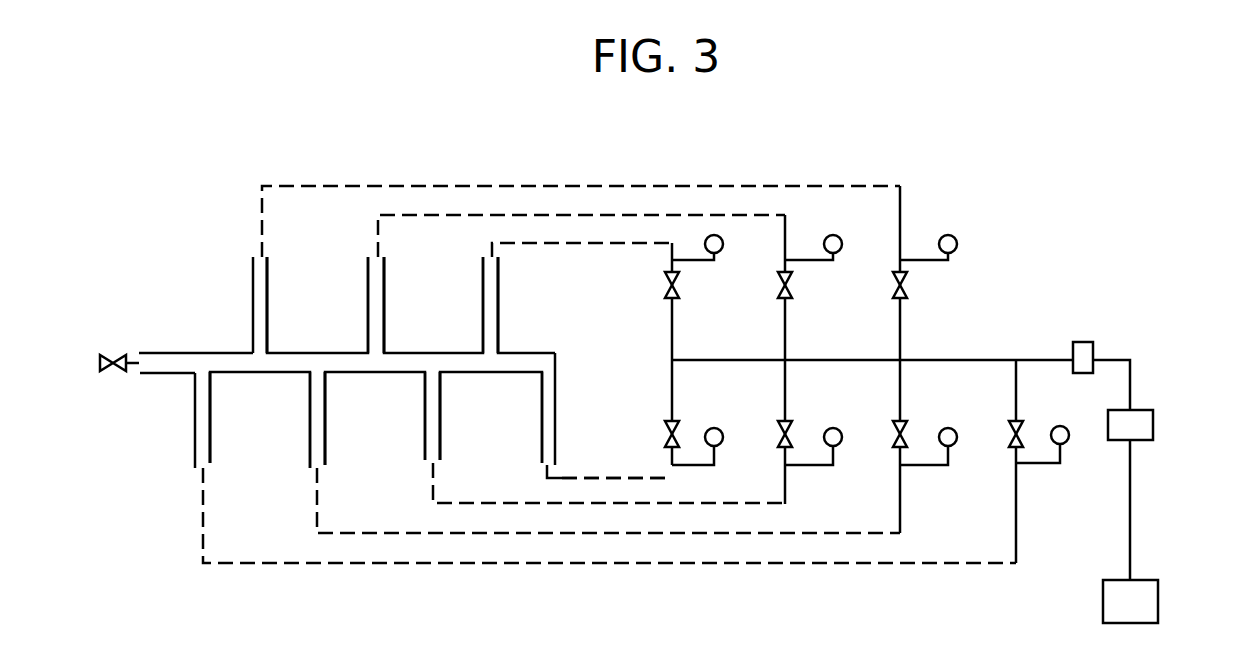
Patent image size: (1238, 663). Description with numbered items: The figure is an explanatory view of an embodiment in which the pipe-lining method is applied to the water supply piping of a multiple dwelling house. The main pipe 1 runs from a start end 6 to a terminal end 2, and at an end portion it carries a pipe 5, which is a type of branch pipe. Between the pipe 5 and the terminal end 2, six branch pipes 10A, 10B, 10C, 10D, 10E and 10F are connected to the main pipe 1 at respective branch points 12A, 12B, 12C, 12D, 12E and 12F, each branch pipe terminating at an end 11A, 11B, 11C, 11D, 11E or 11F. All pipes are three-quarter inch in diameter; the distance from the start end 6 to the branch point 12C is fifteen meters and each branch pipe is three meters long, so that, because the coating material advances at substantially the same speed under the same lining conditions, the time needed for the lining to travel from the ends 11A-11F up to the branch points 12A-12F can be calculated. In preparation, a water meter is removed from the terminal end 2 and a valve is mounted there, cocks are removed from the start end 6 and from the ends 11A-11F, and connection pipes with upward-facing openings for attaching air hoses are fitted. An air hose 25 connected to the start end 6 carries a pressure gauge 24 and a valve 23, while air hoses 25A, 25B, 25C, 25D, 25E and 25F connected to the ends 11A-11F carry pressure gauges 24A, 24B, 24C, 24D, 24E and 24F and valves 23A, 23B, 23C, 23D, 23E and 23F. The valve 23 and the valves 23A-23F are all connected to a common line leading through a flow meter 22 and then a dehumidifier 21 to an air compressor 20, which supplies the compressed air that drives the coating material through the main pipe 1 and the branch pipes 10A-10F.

The main pipe 1 is at (222, 338).
The terminal end 2 is at (136, 373).
The pipe 5 is at (557, 387).
The start end 6 is at (552, 468).
The branch pipe 10A is at (500, 302).
The branch pipe 10B is at (442, 427).
The branch pipe 10C is at (385, 298).
The branch pipe 10D is at (325, 427).
The branch pipe 10E is at (268, 298).
The branch pipe 10F is at (212, 428).
The end of branch pipe 11A is at (498, 252).
The end of branch pipe 11B is at (435, 463).
The end of branch pipe 11C is at (380, 258).
The end of branch pipe 11D is at (320, 467).
The end of branch pipe 11E is at (264, 256).
The end of branch pipe 11F is at (205, 467).
The branch point 12A is at (500, 347).
The branch point 12B is at (443, 373).
The branch point 12C is at (387, 348).
The branch point 12D is at (330, 373).
The branch point 12E is at (270, 348).
The branch point 12F is at (213, 375).
The air compressor 20 is at (1143, 580).
The dehumidifier 21 is at (1152, 412).
The flow meter 22 is at (1095, 342).
The valve 23 is at (677, 428).
The valve 23A is at (673, 298).
The valve 23B is at (790, 425).
The valve 23C is at (786, 298).
The valve 23D is at (908, 425).
The valve 23E is at (910, 288).
The valve 23F is at (1017, 422).
The pressure gauge 24 is at (722, 430).
The pressure gauge 24A is at (728, 250).
The pressure gauge 24B is at (840, 447).
The pressure gauge 24C is at (847, 250).
The pressure gauge 24D is at (955, 447).
The pressure gauge 24E is at (957, 244).
The pressure gauge 24F is at (1065, 447).
The air hose 25 is at (597, 478).
The air hose 25A is at (617, 245).
The air hose 25B is at (500, 505).
The air hose 25C is at (500, 215).
The air hose 25D is at (407, 535).
The air hose 25E is at (438, 185).
The air hose 25F is at (270, 565).